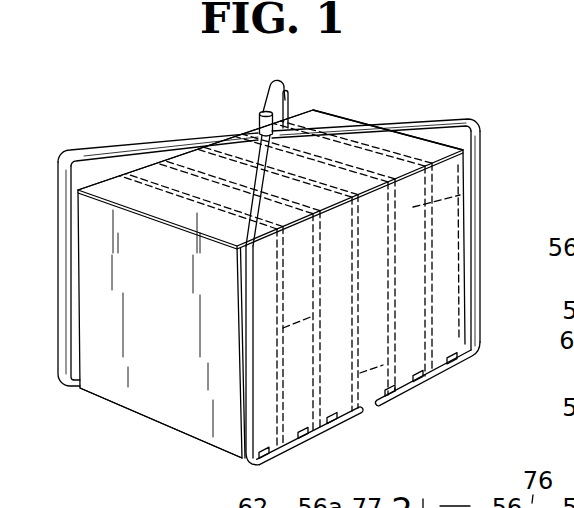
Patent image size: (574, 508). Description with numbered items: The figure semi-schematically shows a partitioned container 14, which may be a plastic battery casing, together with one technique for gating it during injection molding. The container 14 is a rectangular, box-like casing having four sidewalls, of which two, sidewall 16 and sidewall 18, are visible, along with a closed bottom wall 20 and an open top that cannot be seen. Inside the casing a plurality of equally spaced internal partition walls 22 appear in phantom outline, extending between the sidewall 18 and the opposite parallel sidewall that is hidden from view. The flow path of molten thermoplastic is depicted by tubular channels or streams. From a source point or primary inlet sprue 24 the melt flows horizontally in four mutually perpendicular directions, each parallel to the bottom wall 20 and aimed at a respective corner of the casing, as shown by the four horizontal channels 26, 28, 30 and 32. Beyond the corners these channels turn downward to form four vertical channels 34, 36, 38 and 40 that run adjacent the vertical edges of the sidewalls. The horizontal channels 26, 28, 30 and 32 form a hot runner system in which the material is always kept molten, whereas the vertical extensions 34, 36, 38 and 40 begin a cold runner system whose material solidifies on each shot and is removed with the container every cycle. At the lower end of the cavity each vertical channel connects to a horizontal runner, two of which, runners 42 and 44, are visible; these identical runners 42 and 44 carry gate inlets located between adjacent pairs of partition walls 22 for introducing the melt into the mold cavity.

The partitioned container 14 is at (193, 440).
The sidewall 16 is at (153, 395).
The sidewall 18 is at (413, 263).
The bottom wall 20 is at (318, 122).
The partition walls 22 is at (390, 207).
The primary inlet sprue 24 is at (258, 116).
The horizontal channel 26 is at (148, 148).
The horizontal channel 28 is at (262, 88).
The horizontal channel 30 is at (430, 123).
The horizontal channel 32 is at (237, 210).
The vertical channel 34 is at (62, 285).
The vertical channel 36 is at (290, 107).
The vertical channel 38 is at (477, 177).
The vertical channel 40 is at (252, 330).
The horizontal runner 42 is at (330, 417).
The horizontal runner 44 is at (448, 350).